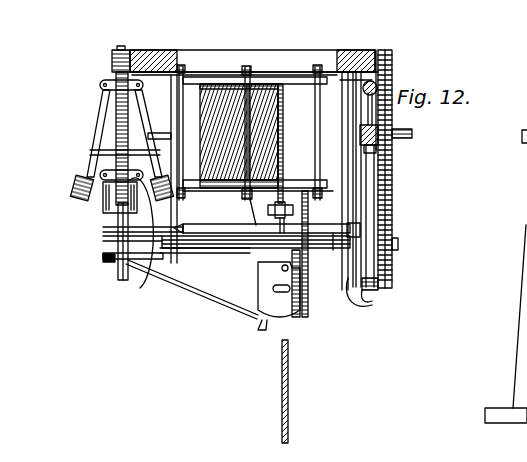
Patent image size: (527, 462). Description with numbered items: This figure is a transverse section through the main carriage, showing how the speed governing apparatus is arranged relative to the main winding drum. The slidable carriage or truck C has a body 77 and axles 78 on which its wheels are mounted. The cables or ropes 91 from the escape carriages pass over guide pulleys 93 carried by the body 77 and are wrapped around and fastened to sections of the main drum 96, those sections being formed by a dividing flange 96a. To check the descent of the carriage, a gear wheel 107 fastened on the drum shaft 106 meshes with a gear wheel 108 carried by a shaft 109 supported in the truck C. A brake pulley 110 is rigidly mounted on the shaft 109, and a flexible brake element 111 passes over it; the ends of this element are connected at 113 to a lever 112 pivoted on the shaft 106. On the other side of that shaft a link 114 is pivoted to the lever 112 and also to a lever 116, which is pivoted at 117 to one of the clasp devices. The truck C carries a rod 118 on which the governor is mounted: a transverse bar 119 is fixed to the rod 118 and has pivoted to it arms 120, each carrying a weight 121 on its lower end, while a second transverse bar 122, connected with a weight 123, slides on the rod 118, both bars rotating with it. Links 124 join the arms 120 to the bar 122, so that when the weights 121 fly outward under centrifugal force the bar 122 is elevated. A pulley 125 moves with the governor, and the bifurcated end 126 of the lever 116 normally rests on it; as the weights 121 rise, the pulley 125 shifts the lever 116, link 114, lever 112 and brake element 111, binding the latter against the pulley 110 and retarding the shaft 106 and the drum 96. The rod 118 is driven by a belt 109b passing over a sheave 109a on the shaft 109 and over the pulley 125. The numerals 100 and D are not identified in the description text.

The slidable carriage or truck C is at (255, 51).
The body 77 is at (323, 52).
The axles 78 is at (369, 50).
The cables or ropes 91 is at (222, 76).
The guide pulleys 93 is at (268, 210).
The main drum 96 is at (258, 134).
The dividing flange 96a is at (246, 158).
The bracket plate 100 is at (270, 312).
The bracket D is at (324, 340).
The drum shaft 106 is at (413, 133).
The gear wheel 107 is at (392, 60).
The gear wheel 108 is at (395, 226).
The shaft 109 is at (399, 244).
The sheave 109a is at (128, 300).
The belt 109b is at (123, 300).
The brake pulley 110 is at (374, 302).
The flexible brake element 111 is at (390, 278).
The lever 112 is at (391, 92).
The connections 113 is at (390, 163).
The link 114 is at (393, 191).
The lever 116 is at (333, 234).
The pivot 117 is at (262, 240).
The rod 118 is at (100, 84).
The transverse bar 119 is at (110, 72).
The arms 120 is at (157, 51).
The weight 121 is at (103, 207).
The transverse bar 122 is at (172, 213).
The weight 123 is at (134, 282).
The links 124 is at (92, 152).
The pulley 125 is at (122, 282).
The bifurcated end 126 is at (106, 254).